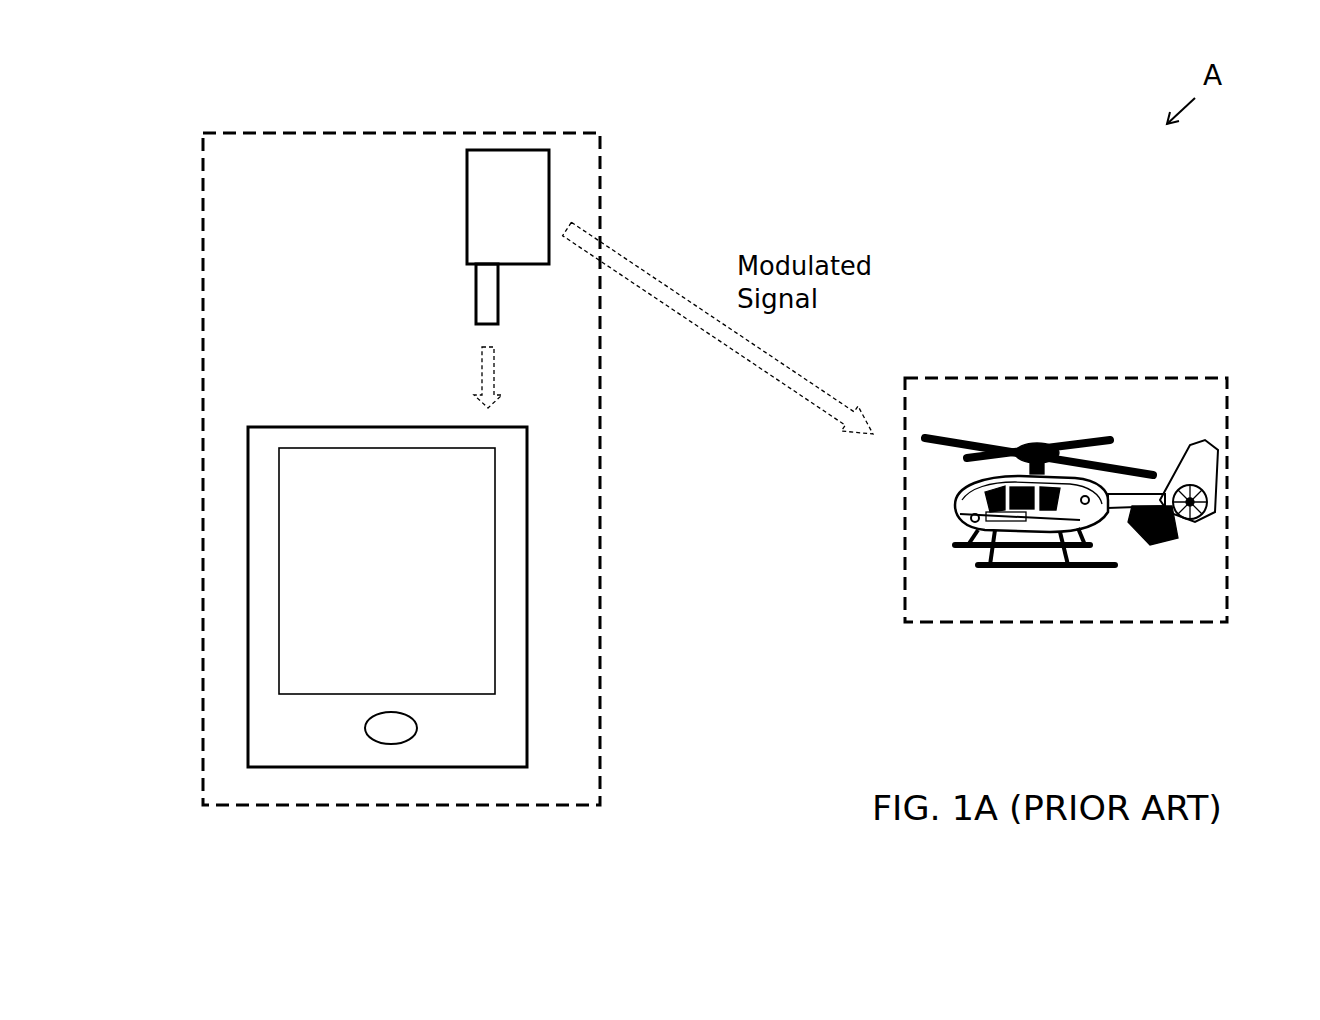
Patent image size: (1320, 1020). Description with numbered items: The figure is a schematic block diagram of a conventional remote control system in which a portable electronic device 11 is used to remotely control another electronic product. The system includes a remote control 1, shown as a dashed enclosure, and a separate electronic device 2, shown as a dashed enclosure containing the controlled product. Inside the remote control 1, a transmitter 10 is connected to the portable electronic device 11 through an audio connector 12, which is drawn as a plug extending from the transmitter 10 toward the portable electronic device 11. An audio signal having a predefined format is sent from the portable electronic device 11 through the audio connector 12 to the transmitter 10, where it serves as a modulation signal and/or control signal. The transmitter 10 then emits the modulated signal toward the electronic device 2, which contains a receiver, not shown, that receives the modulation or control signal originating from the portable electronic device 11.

The remote control 1 is at (584, 133).
The electronic device 2 is at (1040, 377).
The transmitter 10 is at (529, 219).
The portable electronic device 11 is at (305, 420).
The audio connector 12 is at (494, 302).